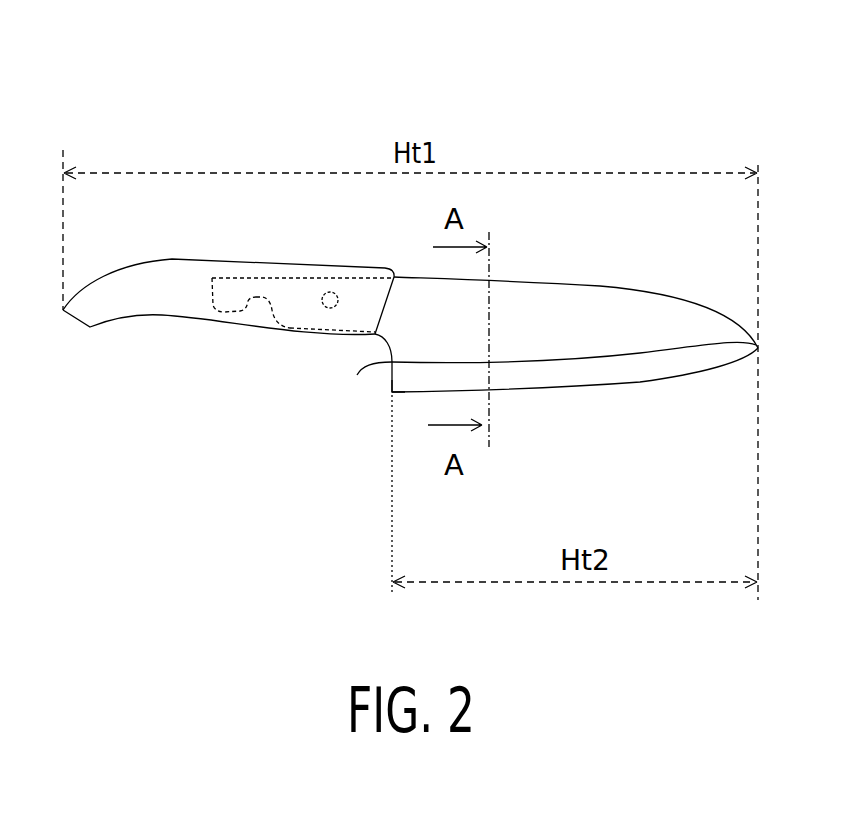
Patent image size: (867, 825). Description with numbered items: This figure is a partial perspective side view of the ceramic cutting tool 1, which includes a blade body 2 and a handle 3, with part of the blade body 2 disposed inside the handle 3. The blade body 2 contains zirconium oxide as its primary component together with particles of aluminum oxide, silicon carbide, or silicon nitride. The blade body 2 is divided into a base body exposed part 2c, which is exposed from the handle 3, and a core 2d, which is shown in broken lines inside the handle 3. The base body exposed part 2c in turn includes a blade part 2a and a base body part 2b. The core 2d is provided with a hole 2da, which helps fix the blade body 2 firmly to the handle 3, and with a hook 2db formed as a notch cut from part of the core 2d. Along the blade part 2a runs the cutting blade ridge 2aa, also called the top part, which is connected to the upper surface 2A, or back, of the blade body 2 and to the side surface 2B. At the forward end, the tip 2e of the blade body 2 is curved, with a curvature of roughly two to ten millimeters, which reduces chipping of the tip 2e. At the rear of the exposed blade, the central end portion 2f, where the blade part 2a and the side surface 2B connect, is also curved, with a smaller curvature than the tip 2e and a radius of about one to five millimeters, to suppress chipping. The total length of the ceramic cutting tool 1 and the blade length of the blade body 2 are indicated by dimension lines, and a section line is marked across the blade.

The ceramic cutting tool 1 is at (542, 70).
The blade body 2 is at (537, 272).
The upper surface 2A is at (558, 282).
The blade part 2a is at (613, 384).
The cutting blade ridge 2aa is at (540, 389).
The base body part 2b is at (666, 328).
The base body exposed part 2c is at (628, 298).
The side surface 2B is at (380, 359).
The core 2d is at (232, 284).
The hole 2da is at (329, 291).
The hook 2db is at (260, 298).
The tip 2e is at (758, 348).
The central end portion 2f is at (392, 393).
The handle 3 is at (117, 311).